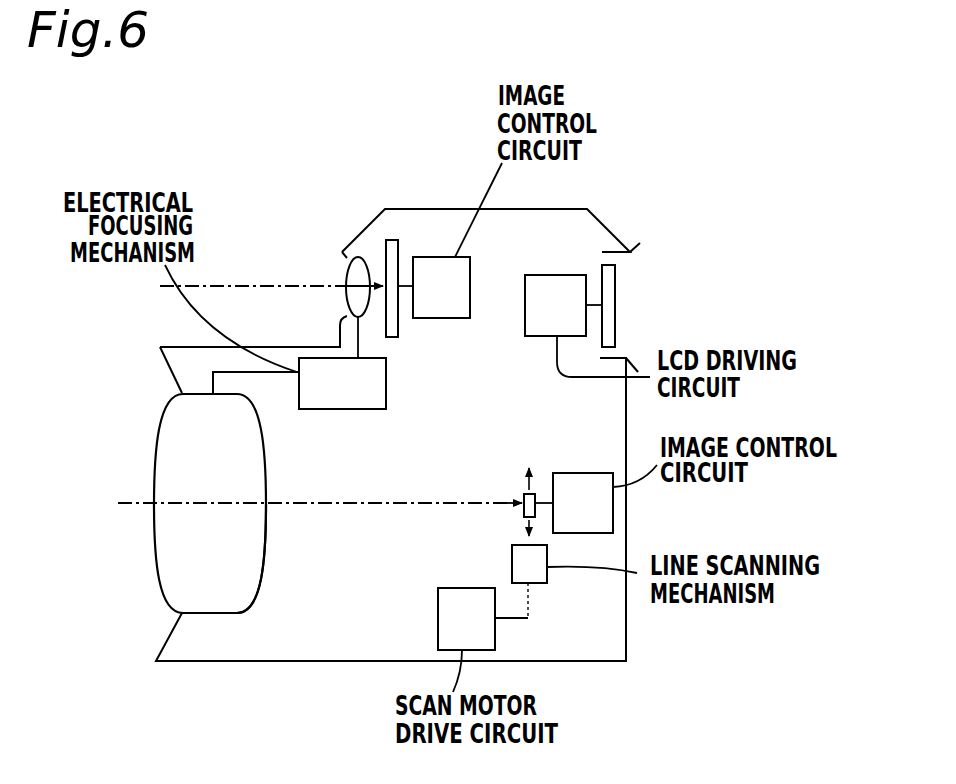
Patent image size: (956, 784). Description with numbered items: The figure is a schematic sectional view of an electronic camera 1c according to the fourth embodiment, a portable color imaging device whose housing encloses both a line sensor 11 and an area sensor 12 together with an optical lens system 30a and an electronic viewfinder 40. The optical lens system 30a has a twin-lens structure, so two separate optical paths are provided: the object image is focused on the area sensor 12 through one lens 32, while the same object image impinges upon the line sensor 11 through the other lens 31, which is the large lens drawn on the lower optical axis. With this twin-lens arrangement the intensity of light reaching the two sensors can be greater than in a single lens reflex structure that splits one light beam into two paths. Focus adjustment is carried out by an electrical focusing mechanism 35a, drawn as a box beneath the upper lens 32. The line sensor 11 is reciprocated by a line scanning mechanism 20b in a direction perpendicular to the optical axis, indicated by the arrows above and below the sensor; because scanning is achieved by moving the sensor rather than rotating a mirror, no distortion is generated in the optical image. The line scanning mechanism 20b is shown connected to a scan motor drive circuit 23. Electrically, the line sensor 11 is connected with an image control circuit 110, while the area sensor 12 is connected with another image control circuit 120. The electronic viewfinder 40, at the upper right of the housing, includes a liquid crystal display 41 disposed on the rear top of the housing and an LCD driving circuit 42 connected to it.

The electronic camera 1c is at (260, 258).
The line sensor 11 is at (523, 492).
The area sensor 12 is at (388, 240).
The image control circuit 120 is at (437, 257).
The line scanning mechanism 20b is at (545, 585).
The scan motor drive circuit 23 is at (438, 617).
The optical lens system 30a is at (258, 432).
The lens 31 is at (266, 532).
The lens 32 is at (345, 298).
The electrical focusing mechanism 35a is at (386, 383).
The electronic viewfinder 40 is at (606, 246).
The liquid crystal display 41 is at (615, 292).
The LCD driving circuit 42 is at (543, 275).
The image control circuit 110 is at (613, 502).